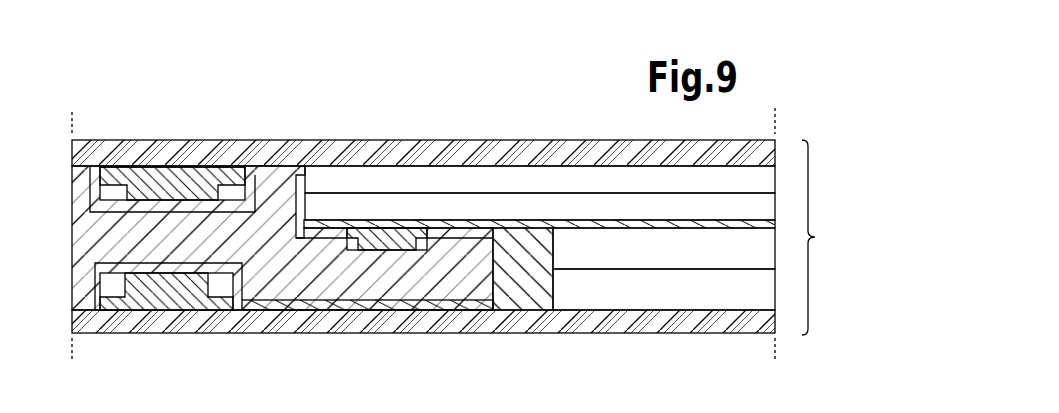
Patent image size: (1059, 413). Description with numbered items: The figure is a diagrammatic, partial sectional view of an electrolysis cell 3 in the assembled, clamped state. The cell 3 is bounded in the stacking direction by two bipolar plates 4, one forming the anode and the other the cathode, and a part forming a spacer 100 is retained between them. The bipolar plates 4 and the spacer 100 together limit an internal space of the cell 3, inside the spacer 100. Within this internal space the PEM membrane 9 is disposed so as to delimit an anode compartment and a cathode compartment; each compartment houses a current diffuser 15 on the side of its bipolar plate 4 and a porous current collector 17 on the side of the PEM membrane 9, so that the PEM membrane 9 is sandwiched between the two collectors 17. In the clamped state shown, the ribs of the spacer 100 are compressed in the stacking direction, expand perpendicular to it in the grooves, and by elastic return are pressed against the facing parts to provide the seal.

The electrolysis cell 3 is at (250, 56).
The bipolar plate 4 is at (350, 140).
The PEM membrane 9 is at (578, 222).
The current diffuser 15 is at (412, 170).
The porous current collector 17 is at (483, 205).
The spacer 100 is at (278, 218).